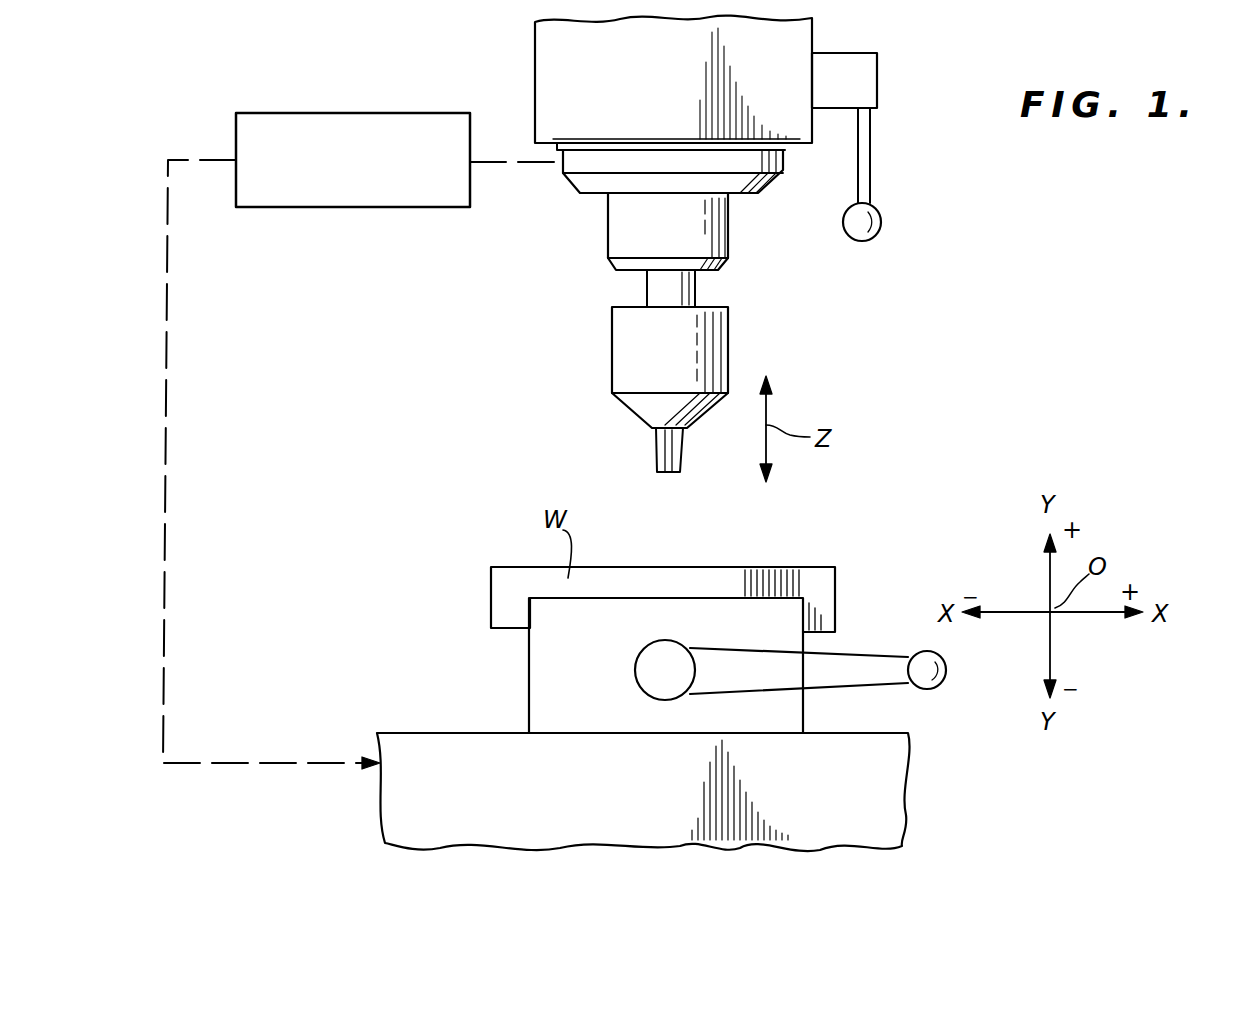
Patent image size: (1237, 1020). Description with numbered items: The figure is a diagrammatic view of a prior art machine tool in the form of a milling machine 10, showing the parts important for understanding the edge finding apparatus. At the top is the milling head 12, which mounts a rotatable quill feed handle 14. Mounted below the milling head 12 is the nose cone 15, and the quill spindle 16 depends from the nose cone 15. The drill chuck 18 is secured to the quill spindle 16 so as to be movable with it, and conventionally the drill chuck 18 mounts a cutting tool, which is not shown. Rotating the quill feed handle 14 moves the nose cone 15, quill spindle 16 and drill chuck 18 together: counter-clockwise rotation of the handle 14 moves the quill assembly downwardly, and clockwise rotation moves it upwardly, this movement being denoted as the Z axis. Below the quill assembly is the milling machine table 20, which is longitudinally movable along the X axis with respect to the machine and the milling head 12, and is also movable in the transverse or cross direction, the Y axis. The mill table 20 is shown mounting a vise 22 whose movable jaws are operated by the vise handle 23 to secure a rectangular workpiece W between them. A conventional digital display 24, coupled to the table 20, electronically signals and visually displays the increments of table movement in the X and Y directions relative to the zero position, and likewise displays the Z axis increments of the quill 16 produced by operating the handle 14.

The milling machine 10 is at (968, 290).
The milling head 12 is at (673, 79).
The quill feed handle 14 is at (881, 216).
The nose cone 15 is at (596, 163).
The quill spindle 16 is at (732, 232).
The drill chuck 18 is at (628, 348).
The milling machine table 20 is at (643, 792).
The vise 22 is at (540, 677).
The vise handle 23 is at (932, 684).
The digital display 24 is at (343, 208).